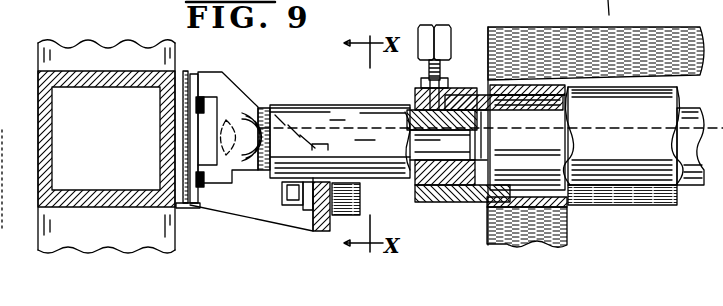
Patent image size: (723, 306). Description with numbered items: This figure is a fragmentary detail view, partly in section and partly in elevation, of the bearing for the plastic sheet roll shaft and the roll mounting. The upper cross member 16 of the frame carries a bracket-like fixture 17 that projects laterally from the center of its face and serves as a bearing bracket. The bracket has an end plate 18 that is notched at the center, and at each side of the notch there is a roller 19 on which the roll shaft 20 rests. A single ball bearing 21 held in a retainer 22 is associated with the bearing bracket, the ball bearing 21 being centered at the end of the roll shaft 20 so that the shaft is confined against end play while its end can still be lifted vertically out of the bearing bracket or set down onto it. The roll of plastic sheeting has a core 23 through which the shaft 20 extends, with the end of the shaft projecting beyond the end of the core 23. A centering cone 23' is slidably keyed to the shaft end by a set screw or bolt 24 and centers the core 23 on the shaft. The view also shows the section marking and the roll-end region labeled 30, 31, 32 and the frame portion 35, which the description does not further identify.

The upper cross member 16 is at (40, 98).
The bracket-like fixture 17 is at (250, 206).
The end plate 18 is at (318, 232).
The roller 19 is at (362, 198).
The roll shaft 20 is at (345, 104).
The ball bearing 21 is at (254, 112).
The retainer 22 is at (218, 97).
The core 23 is at (623, 212).
The centering cone 23' is at (487, 167).
The set screw or bolt 24 is at (445, 40).
The support member 30 is at (560, 26).
The body 31 is at (526, 26).
The rod 32 is at (633, 92).
The frame member 35 is at (18, 115).